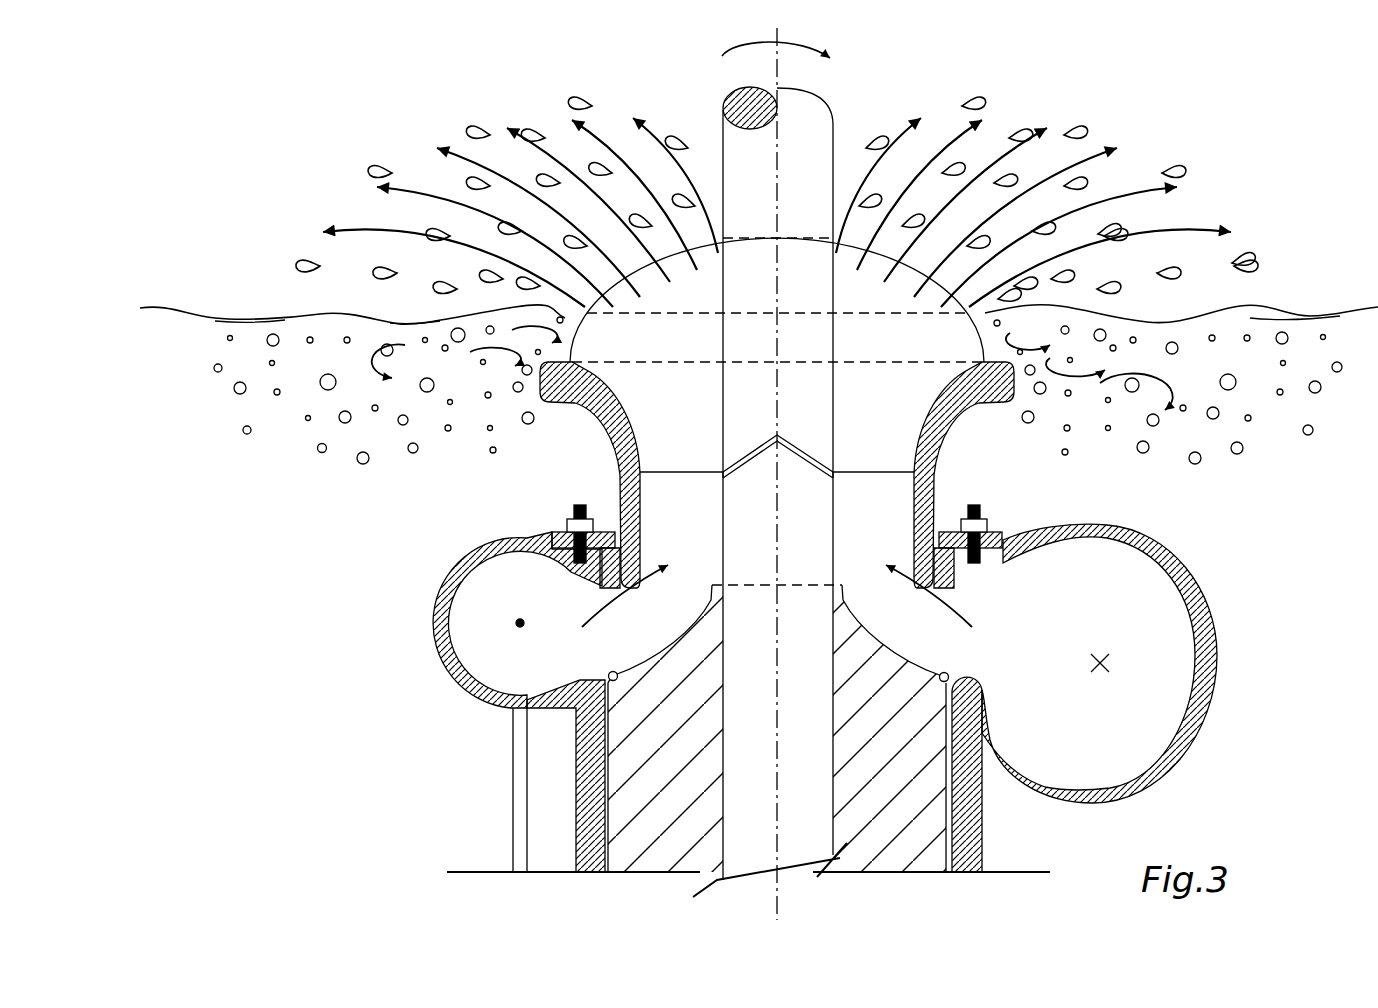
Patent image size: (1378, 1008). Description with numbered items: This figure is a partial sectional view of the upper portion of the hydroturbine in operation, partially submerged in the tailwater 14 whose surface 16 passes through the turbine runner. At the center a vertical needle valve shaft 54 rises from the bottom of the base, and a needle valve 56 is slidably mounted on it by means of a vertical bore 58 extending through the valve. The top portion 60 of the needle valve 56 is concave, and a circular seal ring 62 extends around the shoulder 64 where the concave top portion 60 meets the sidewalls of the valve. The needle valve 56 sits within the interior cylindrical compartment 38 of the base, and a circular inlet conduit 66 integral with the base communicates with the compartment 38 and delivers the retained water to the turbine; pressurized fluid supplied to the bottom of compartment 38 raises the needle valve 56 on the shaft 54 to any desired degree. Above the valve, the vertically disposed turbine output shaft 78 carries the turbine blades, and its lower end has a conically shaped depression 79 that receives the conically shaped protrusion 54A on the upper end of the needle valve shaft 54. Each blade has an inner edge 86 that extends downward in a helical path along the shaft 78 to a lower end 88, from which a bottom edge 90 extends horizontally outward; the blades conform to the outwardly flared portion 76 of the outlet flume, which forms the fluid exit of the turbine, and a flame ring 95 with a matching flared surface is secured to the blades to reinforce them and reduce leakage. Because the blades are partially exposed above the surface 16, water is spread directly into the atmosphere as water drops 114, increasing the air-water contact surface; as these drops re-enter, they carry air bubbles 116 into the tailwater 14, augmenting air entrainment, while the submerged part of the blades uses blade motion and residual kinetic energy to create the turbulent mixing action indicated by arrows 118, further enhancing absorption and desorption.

The tailwater 14 is at (200, 316).
The surface 16 is at (175, 310).
The interior cylindrical compartment 38 is at (958, 825).
The needle valve shaft 54 is at (812, 518).
The conically shaped protrusion 54A is at (770, 455).
The needle valve 56 is at (640, 862).
The vertical bore 58 is at (831, 692).
The top portion 60 is at (862, 612).
The circular seal ring 62 is at (947, 674).
The shoulder 64 is at (620, 670).
The circular inlet conduit 66 is at (437, 600).
The flared portion 76 is at (940, 403).
The turbine output shaft 78 is at (808, 133).
The conically shaped depression 79 is at (797, 440).
The inner edge 86 is at (722, 342).
The lower end 88 is at (722, 470).
The bottom edge 90 is at (658, 473).
The flame ring 95 is at (915, 441).
The water drops 114 is at (1082, 122).
The air bubbles 116 is at (320, 455).
The arrows 118 is at (412, 440).